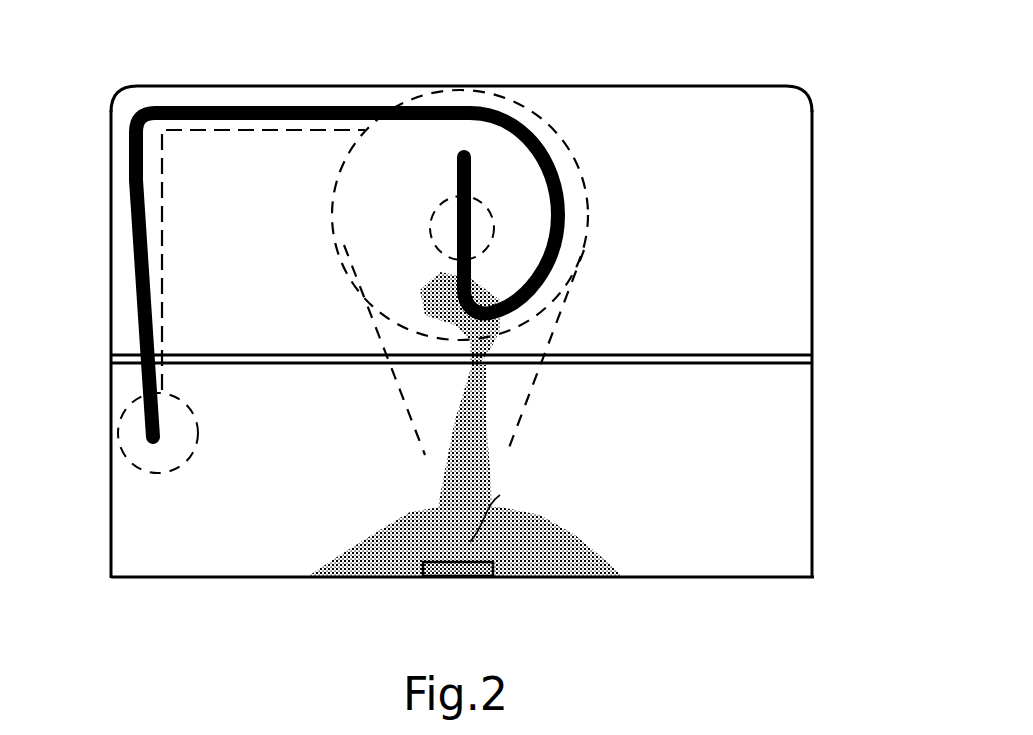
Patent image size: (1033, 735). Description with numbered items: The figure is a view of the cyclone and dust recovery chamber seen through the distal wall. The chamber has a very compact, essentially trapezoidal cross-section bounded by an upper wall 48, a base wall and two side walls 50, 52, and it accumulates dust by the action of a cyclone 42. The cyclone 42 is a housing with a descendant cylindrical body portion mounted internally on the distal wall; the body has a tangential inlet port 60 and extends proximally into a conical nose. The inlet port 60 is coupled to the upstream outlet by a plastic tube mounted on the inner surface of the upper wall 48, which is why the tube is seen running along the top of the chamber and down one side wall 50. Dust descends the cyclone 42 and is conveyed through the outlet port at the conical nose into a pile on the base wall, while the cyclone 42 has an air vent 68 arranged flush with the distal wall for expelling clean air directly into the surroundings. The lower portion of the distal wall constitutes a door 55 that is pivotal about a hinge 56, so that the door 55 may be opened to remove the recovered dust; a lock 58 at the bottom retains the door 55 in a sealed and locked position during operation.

The cyclone 42 is at (560, 320).
The upper wall 48 is at (668, 85).
The side wall 50 is at (110, 268).
The side wall 52 is at (812, 242).
The door 55 is at (787, 487).
The hinge 56 is at (793, 363).
The lock 58 is at (463, 580).
The tangential inlet port 60 is at (395, 100).
The air vent 68 is at (482, 207).